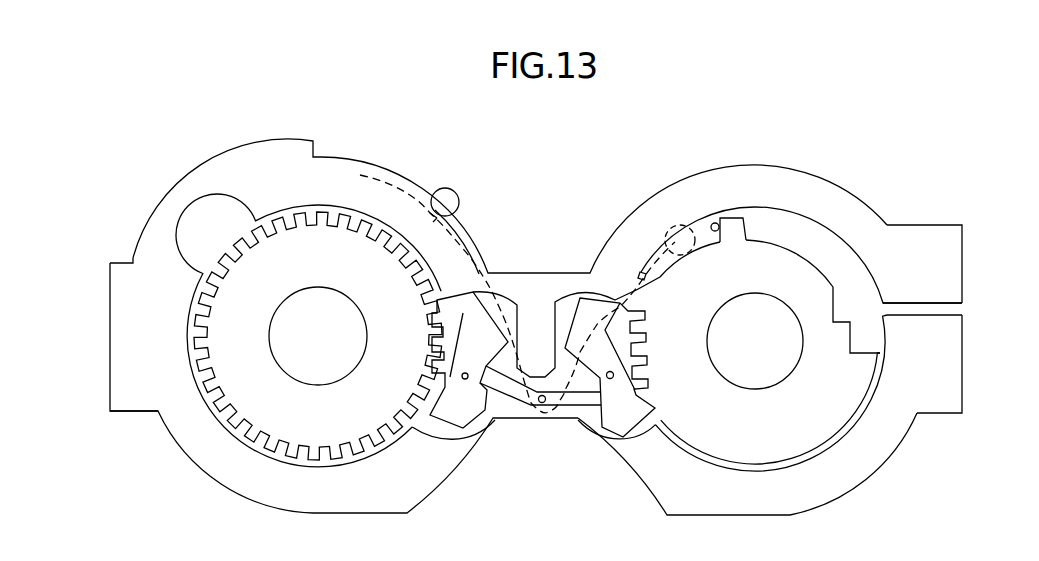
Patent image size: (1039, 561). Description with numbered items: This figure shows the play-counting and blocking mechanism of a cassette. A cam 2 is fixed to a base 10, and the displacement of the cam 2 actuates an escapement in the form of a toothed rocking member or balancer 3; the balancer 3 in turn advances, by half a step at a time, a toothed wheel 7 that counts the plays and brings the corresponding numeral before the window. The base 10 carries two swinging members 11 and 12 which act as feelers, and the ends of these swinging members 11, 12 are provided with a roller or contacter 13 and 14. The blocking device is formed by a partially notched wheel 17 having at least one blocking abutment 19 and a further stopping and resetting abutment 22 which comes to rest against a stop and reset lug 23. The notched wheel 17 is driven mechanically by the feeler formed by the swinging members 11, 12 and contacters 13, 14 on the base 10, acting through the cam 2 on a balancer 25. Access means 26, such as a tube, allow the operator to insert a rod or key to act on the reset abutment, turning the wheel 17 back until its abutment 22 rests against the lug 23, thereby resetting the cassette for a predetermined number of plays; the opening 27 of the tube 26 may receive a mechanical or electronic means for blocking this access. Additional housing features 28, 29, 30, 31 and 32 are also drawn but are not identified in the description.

The cam 2 is at (498, 425).
The balancer 3 is at (483, 330).
The toothed wheel 7 is at (343, 430).
The base 10 is at (542, 405).
The swinging member 11 is at (470, 245).
The swinging member 12 is at (643, 275).
The roller or contacter 13 is at (680, 225).
The roller or contacter 14 is at (448, 196).
The notched wheel 17 is at (745, 463).
The blocking abutment 19 is at (653, 412).
The stopping and resetting abutment 22 is at (737, 232).
The stop and reset lug 23 is at (717, 224).
The balancer 25 is at (617, 422).
The access means 26 is at (937, 308).
The opening 27 is at (963, 313).
The right housing wall 28 is at (850, 480).
The left housing step 29 is at (125, 273).
The left housing lower step 30 is at (132, 404).
The right housing step 31 is at (955, 233).
The right housing lower step 32 is at (947, 403).